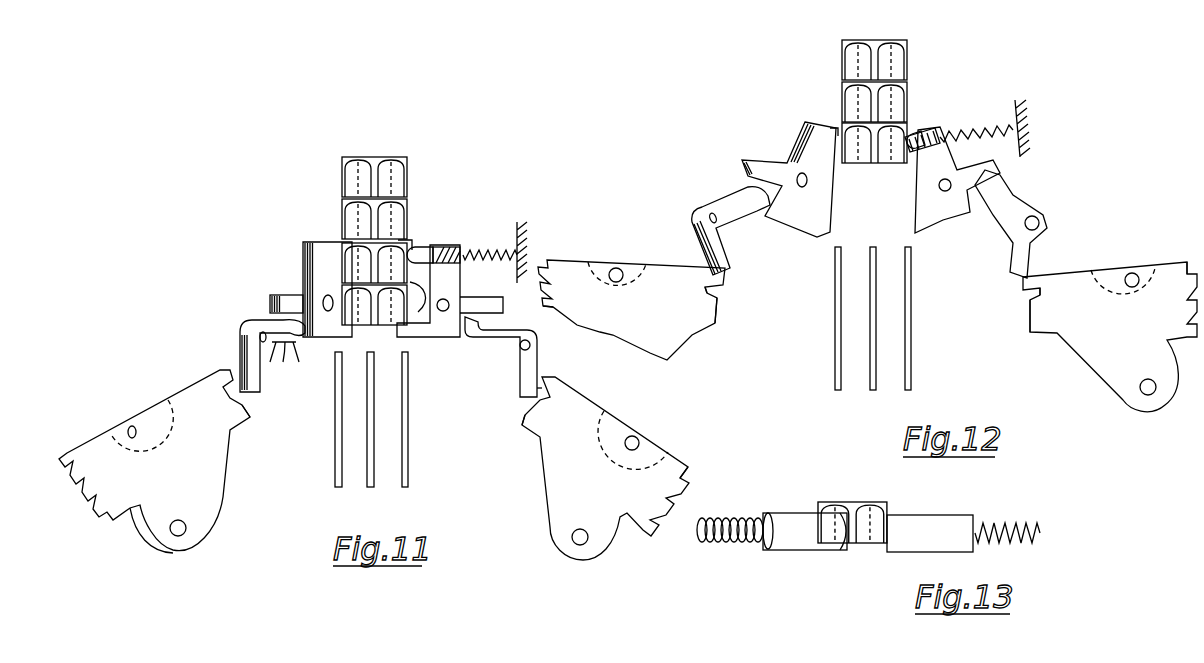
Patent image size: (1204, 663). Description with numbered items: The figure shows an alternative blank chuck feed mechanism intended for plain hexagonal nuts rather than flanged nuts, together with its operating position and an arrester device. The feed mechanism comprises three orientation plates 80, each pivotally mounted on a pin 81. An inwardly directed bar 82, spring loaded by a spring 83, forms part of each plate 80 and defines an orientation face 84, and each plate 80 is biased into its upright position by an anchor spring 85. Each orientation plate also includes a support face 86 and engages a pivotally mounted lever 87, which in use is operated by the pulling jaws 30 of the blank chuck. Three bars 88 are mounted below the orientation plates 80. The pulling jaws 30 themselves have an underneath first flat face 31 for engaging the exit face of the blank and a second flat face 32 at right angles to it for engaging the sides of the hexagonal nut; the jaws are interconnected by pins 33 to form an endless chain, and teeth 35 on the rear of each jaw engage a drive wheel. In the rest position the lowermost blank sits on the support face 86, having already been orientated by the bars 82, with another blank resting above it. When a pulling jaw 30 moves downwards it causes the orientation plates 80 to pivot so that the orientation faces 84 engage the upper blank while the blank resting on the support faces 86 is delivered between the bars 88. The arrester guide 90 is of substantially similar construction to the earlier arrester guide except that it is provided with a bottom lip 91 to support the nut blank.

In FIG. 11, the pulling jaw 30 is at (210, 492).
In FIG. 12, the pulling jaw 30 is at (580, 277).
In FIG. 11, the first flat face 31 is at (523, 390).
In FIG. 12, the first flat face 31 is at (720, 295).
In FIG. 11, the second flat face 32 is at (243, 405).
In FIG. 12, the second flat face 32 is at (715, 323).
In FIG. 11, the pin 33 is at (183, 530).
In FIG. 12, the pin 33 is at (1143, 390).
In FIG. 11, the teeth 35 is at (673, 485).
In FIG. 12, the teeth 35 is at (562, 262).
In FIG. 11, the orientation plate 80 is at (323, 257).
In FIG. 12, the orientation plate 80 is at (803, 213).
In FIG. 11, the pin 81 is at (448, 305).
In FIG. 12, the pin 81 is at (940, 186).
In FIG. 11, the inwardly directed bar 82 is at (422, 255).
In FIG. 12, the inwardly directed bar 82 is at (918, 132).
In FIG. 11, the spring 83 is at (447, 247).
In FIG. 12, the spring 83 is at (937, 137).
In FIG. 11, the orientation face 84 is at (407, 242).
In FIG. 12, the orientation face 84 is at (838, 128).
In FIG. 11, the anchor spring 85 is at (481, 255).
In FIG. 12, the anchor spring 85 is at (993, 130).
In FIG. 11, the support face 86 is at (418, 294).
In FIG. 11, the lever 87 is at (240, 340).
In FIG. 12, the lever 87 is at (697, 223).
In FIG. 11, the bar 88 is at (367, 455).
In FIG. 12, the bar 88 is at (860, 340).
In FIG. 13, the arrester guide 90 is at (943, 528).
In FIG. 13, the bottom lip 91 is at (883, 547).